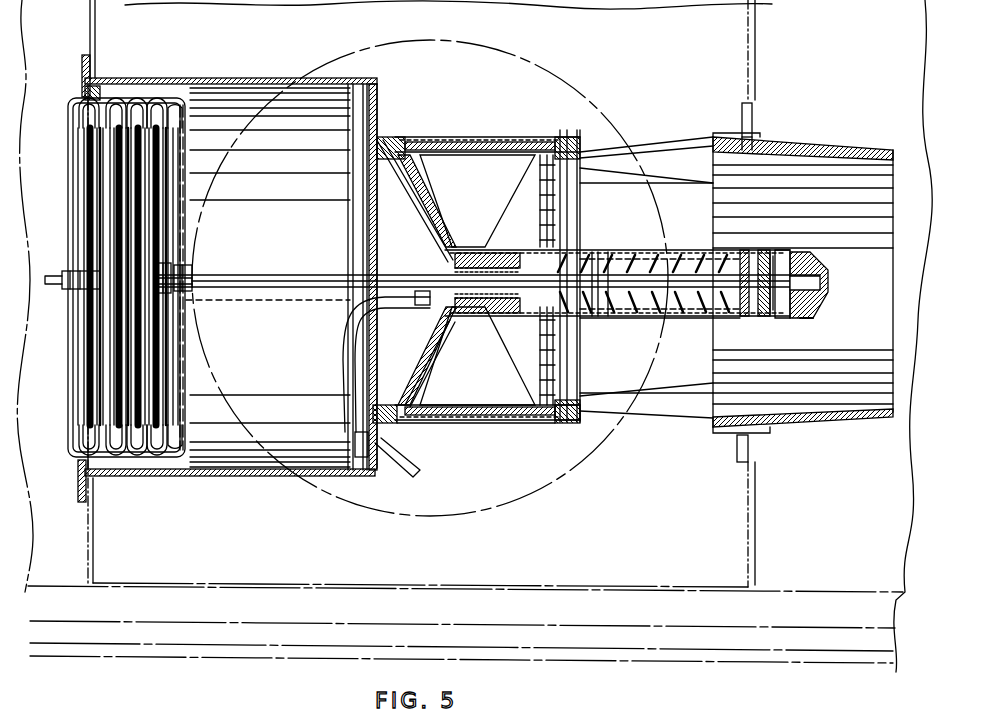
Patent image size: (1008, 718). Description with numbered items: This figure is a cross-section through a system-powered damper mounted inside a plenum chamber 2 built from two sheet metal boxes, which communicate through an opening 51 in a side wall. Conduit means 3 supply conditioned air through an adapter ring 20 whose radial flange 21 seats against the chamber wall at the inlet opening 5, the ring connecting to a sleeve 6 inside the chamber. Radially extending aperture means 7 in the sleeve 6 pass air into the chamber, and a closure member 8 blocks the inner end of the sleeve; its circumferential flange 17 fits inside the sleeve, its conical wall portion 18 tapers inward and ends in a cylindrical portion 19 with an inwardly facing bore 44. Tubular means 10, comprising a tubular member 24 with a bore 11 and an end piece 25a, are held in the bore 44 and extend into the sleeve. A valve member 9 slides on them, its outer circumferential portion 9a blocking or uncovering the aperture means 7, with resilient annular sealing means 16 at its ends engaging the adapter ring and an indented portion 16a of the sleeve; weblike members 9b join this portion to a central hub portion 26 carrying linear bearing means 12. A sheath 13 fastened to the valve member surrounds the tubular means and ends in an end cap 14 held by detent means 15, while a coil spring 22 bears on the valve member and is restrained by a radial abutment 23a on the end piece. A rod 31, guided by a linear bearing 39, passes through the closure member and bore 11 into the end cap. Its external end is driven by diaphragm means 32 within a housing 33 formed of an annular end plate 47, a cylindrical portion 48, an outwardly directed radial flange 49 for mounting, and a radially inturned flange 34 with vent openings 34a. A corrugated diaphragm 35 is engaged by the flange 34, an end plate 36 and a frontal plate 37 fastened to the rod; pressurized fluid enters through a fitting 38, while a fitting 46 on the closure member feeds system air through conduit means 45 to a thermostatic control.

The plenum chamber 2 is at (694, 57).
The conduit means 3 is at (792, 135).
The inlet opening 5 is at (750, 443).
The sleeve 6 is at (550, 137).
The aperture means 7 is at (580, 134).
The closure member 8 is at (398, 184).
The valve member 9 is at (440, 136).
The outer circumferential portion 9a is at (488, 140).
The weblike members 9b is at (490, 201).
The tubular means 10 is at (612, 262).
The bore 11 is at (662, 256).
The bearing means 12 is at (512, 315).
The sheath 13 is at (704, 250).
The end cap 14 is at (829, 266).
The detent means 15 is at (800, 318).
The annular sealing means 16 is at (396, 424).
The indented portion 16a is at (546, 423).
The circumferential flange 17 is at (388, 138).
The conical wall portion 18 is at (430, 238).
The cylindrical portion 19 is at (358, 288).
The adapter ring 20 is at (874, 150).
The radial flange 21 is at (740, 110).
The coil spring 22 is at (656, 319).
The radial abutment 23a is at (766, 318).
The tubular member 24 is at (652, 256).
The end piece 25a is at (745, 317).
The central hub portion 26 is at (506, 253).
The rod 31 is at (598, 276).
The diaphragm means 32 is at (250, 60).
The housing 33 is at (294, 76).
The radially inturned flange 34 is at (82, 90).
The vent openings 34a is at (78, 478).
The diaphragm 35 is at (138, 100).
The end plate 36 is at (70, 137).
The frontal plate 37 is at (178, 214).
The fitting 38 is at (66, 290).
The linear bearing 39 is at (376, 250).
The bore 44 is at (458, 313).
The conduit means 45 is at (342, 352).
The fitting 46 is at (420, 306).
The annular end plate 47 is at (378, 96).
The cylindrical portion 48 is at (200, 78).
The outwardly directed radial flange 49 is at (90, 52).
The opening 51 is at (444, 520).